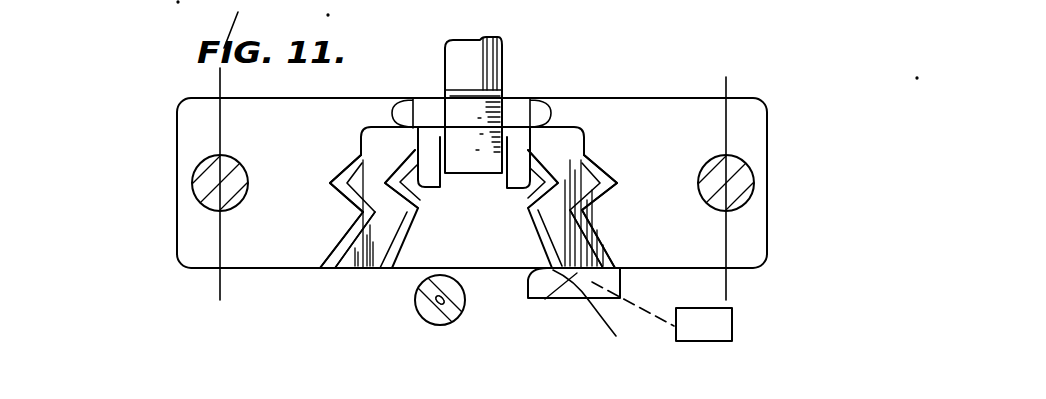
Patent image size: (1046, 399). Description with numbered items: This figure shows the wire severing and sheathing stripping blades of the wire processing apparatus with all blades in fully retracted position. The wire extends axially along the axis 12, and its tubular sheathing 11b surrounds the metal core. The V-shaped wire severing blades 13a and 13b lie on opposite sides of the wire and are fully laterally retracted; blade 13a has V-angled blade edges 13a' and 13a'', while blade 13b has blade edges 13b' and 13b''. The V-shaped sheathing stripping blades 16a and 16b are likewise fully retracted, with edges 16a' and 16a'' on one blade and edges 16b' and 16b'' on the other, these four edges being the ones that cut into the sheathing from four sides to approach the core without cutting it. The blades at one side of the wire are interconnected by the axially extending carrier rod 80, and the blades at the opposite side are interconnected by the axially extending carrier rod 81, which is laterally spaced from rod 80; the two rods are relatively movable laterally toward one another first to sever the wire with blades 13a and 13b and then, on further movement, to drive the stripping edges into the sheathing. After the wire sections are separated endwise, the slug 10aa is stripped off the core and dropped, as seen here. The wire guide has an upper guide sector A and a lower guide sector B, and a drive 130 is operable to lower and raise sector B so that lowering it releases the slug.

The axis 12 is at (100, 20).
The carrier rod 80 is at (193, 182).
The carrier rod 81 is at (752, 172).
The upper guide sector A is at (462, 240).
The wire guide lower sector B is at (552, 315).
The wire severing blade 13a is at (357, 242).
The blade edge 13a' is at (407, 127).
The blade edge 13a'' is at (354, 261).
The wire severing blade 13b is at (548, 237).
The blade edge 13b' is at (572, 128).
The blade edge 13b'' is at (515, 204).
The sheathing stripping blade 16a is at (304, 211).
The blade edge 16a' is at (308, 165).
The blade edge 16a'' is at (301, 267).
The sheathing stripping blade 16b is at (626, 211).
The blade edge 16b' is at (614, 166).
The blade edge 16b'' is at (624, 238).
The rearward end portion (slug) 10aa is at (422, 322).
The tubular sheathing 11b is at (452, 326).
The drive 130 is at (732, 323).